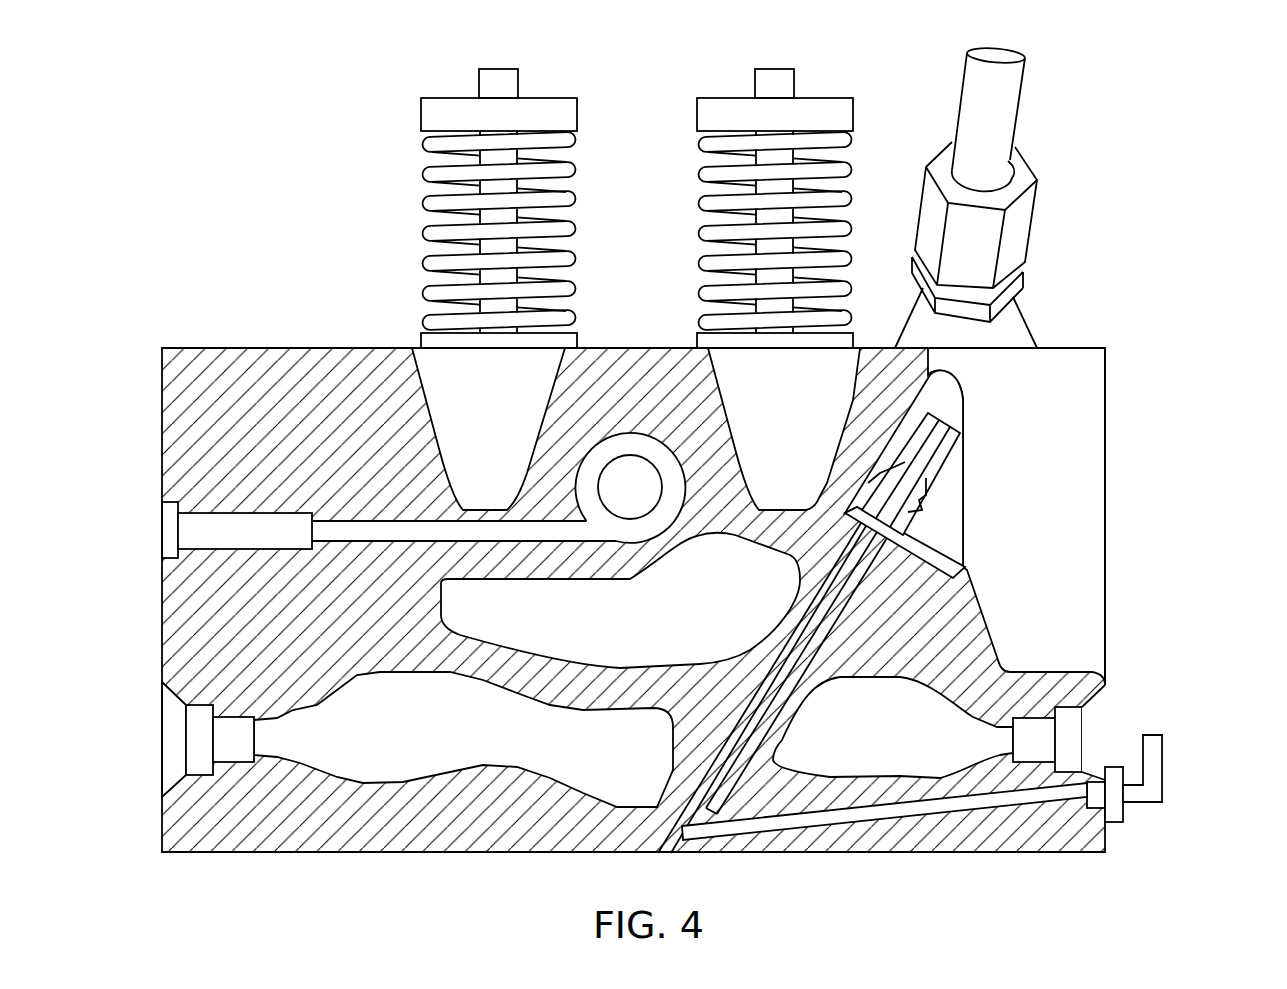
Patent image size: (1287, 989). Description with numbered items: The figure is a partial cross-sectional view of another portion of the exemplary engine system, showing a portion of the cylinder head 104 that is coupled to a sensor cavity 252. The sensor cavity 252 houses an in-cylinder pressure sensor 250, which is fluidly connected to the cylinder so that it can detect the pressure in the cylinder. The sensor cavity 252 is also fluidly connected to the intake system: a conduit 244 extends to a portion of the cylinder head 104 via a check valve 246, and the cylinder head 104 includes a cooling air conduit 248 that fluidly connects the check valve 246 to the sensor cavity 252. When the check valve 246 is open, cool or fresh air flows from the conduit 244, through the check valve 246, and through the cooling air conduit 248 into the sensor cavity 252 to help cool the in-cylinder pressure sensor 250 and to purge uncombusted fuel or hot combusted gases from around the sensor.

The cylinder head 104 is at (248, 853).
The conduit 244 is at (1162, 753).
The check valve 246 is at (1123, 812).
The cooling air conduit 248 is at (872, 820).
The in-cylinder pressure sensor 250 is at (908, 512).
The sensor cavity 252 is at (690, 845).